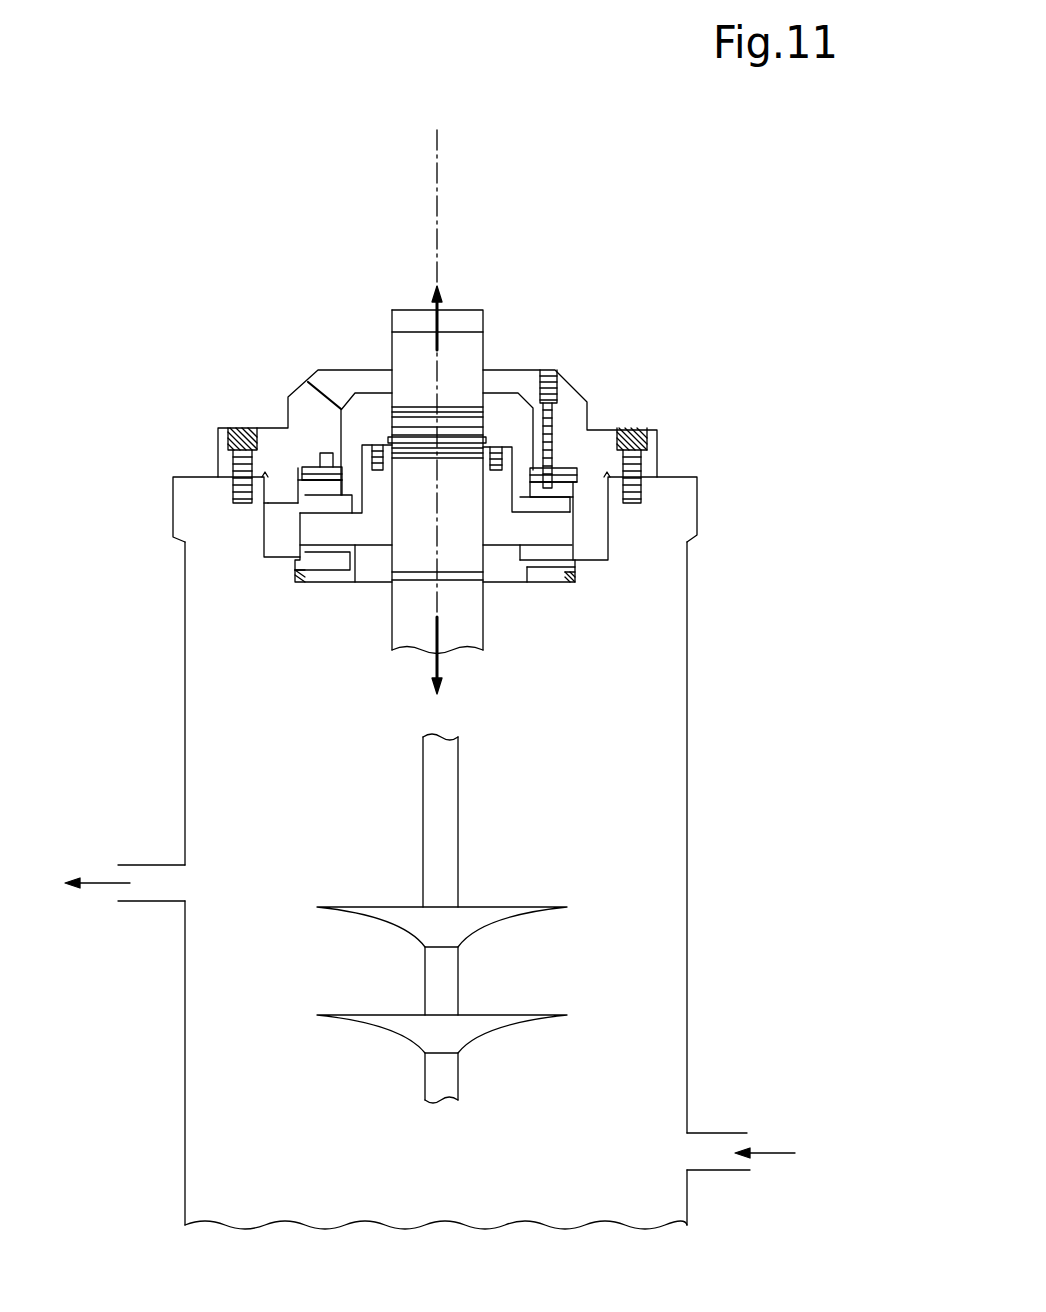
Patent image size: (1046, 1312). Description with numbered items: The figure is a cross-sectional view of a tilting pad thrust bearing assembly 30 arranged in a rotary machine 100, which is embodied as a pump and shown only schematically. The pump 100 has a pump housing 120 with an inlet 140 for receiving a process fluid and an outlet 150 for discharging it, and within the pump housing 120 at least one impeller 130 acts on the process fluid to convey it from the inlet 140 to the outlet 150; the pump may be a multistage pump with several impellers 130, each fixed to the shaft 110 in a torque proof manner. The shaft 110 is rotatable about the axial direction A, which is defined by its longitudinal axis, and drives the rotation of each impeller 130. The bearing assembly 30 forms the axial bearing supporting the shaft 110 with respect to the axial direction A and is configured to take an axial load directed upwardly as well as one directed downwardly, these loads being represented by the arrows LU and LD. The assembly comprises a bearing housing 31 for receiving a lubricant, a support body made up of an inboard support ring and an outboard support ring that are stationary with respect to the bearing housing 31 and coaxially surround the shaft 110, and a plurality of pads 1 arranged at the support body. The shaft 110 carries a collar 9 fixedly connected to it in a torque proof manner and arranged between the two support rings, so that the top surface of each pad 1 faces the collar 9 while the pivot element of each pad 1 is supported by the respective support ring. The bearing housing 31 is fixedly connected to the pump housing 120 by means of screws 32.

The rotary machine 100 is at (597, 190).
The shaft 110 is at (460, 360).
The pump housing 120 is at (690, 728).
The impeller 130 is at (505, 907).
The inlet 140 is at (718, 1132).
The outlet 150 is at (142, 905).
The tilting pad thrust bearing assembly 30 is at (152, 470).
The bearing housing 31 is at (567, 374).
The screws 32 is at (220, 430).
The pad 1 is at (327, 507).
The collar 9 is at (327, 523).
The axial direction A is at (440, 162).
The upward axial load LU is at (433, 318).
The downward axial load LD is at (440, 656).